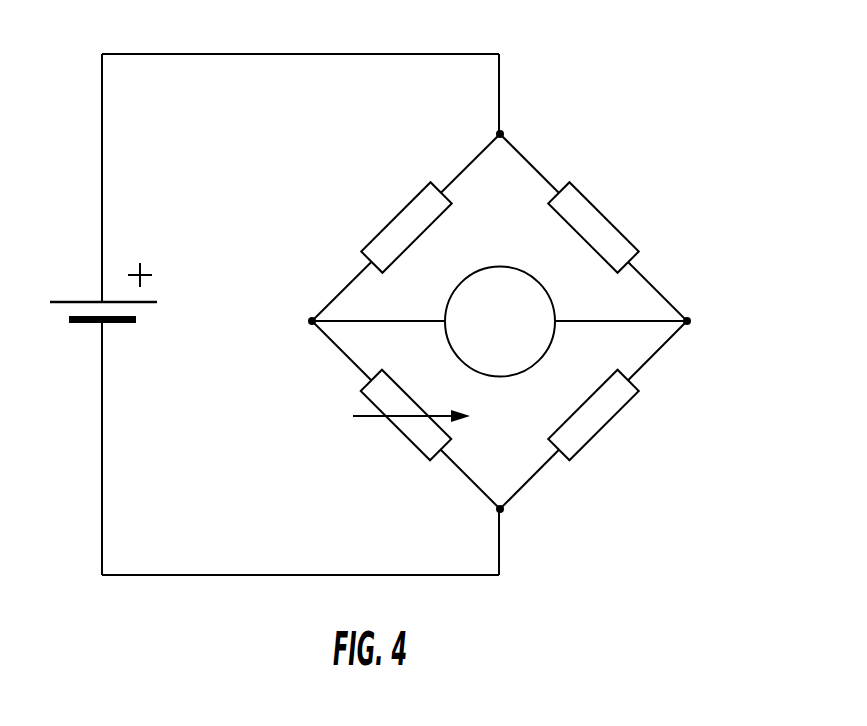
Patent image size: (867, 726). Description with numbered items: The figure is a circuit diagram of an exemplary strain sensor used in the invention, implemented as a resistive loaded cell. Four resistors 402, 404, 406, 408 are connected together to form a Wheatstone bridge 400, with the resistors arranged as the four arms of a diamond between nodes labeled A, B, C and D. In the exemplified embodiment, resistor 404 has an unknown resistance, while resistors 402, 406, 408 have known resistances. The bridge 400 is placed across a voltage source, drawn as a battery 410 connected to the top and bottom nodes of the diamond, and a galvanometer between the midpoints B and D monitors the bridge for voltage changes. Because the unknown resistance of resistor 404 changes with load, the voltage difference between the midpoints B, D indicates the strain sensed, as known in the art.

The Wheatstone bridge 400 is at (676, 68).
The resistor 402 is at (408, 205).
The resistor 404 is at (412, 440).
The resistor 406 is at (618, 408).
The resistor 408 is at (628, 238).
The battery / voltage source 410 is at (82, 323).